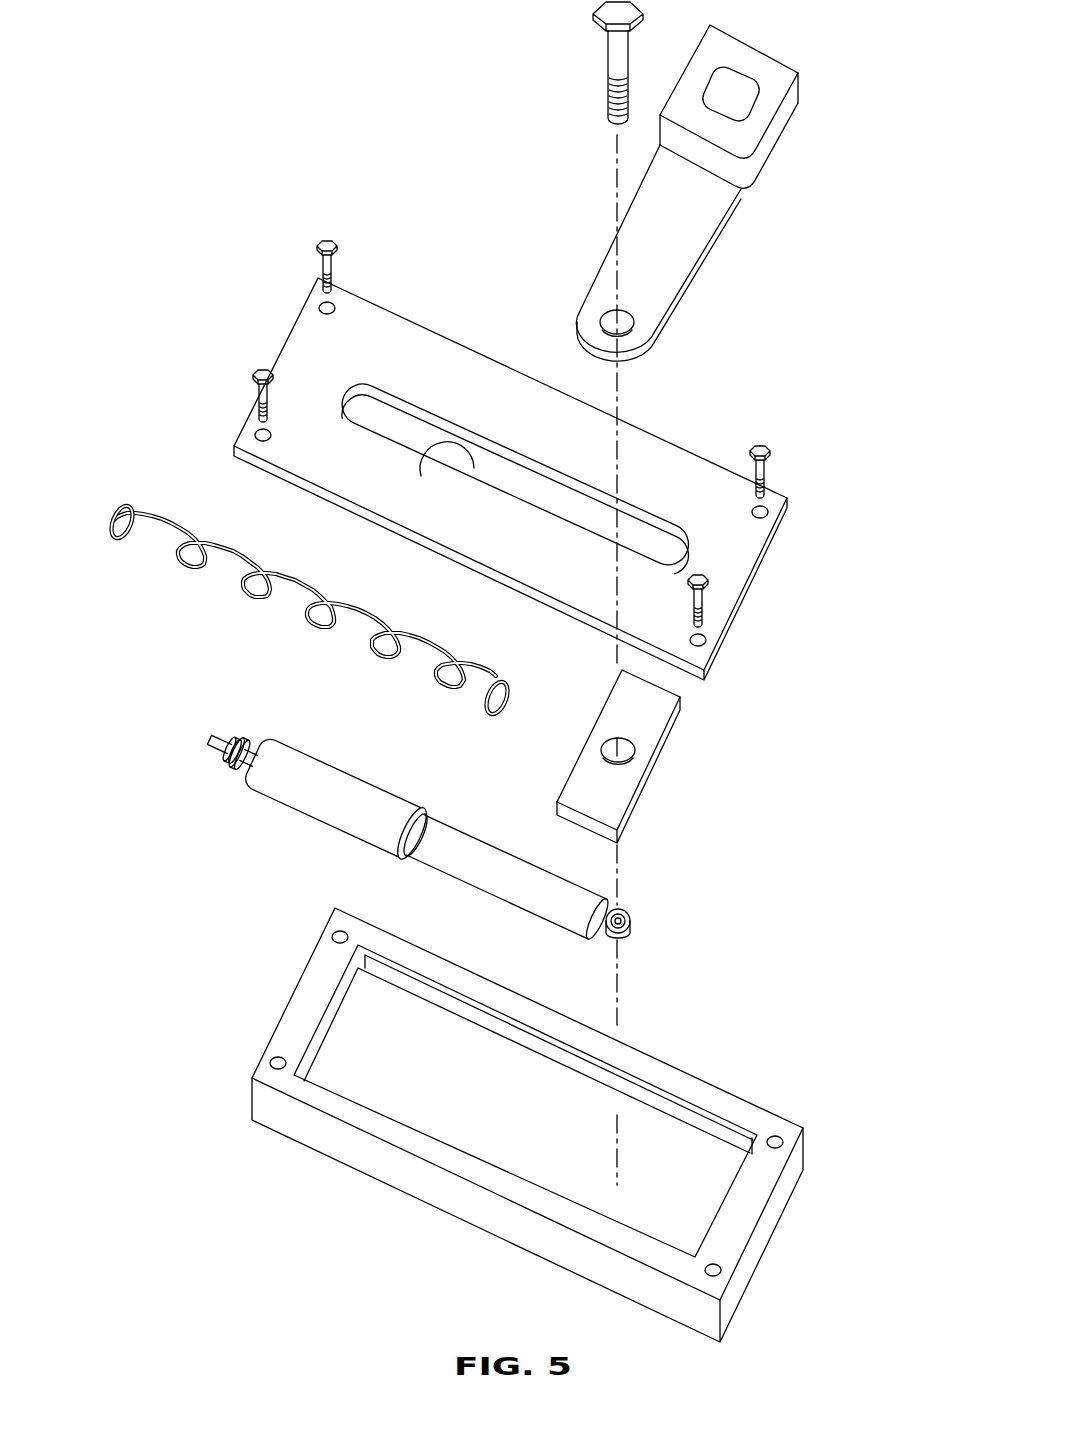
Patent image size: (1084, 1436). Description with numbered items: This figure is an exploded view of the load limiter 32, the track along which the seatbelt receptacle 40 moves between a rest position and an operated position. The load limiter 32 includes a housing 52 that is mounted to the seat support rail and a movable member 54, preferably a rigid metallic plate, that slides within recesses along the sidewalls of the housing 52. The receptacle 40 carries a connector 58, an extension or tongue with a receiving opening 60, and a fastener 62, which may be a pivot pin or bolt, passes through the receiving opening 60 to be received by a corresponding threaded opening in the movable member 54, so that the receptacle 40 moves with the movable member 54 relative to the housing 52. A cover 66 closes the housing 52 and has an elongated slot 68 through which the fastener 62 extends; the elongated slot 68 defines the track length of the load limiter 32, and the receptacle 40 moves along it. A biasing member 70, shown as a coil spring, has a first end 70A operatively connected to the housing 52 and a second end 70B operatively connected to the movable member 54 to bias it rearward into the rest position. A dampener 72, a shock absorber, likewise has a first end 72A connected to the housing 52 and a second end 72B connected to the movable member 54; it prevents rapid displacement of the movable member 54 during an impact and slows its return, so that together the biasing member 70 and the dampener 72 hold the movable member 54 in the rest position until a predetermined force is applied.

The load limiter 32 is at (826, 236).
The receptacle 40 is at (778, 50).
The housing 52 is at (322, 1162).
The movable member 54 is at (672, 732).
The connector 58 is at (690, 284).
The receiving opening 60 is at (604, 318).
The fastener 62 is at (597, 28).
The cover plate 66 is at (689, 447).
The elongated slot 68 is at (426, 460).
The biasing member 70 is at (330, 584).
The first end 70A is at (117, 510).
The second end 70B is at (513, 693).
The dampener 72 is at (443, 828).
The first end 72A is at (214, 735).
The second end 72B is at (632, 935).